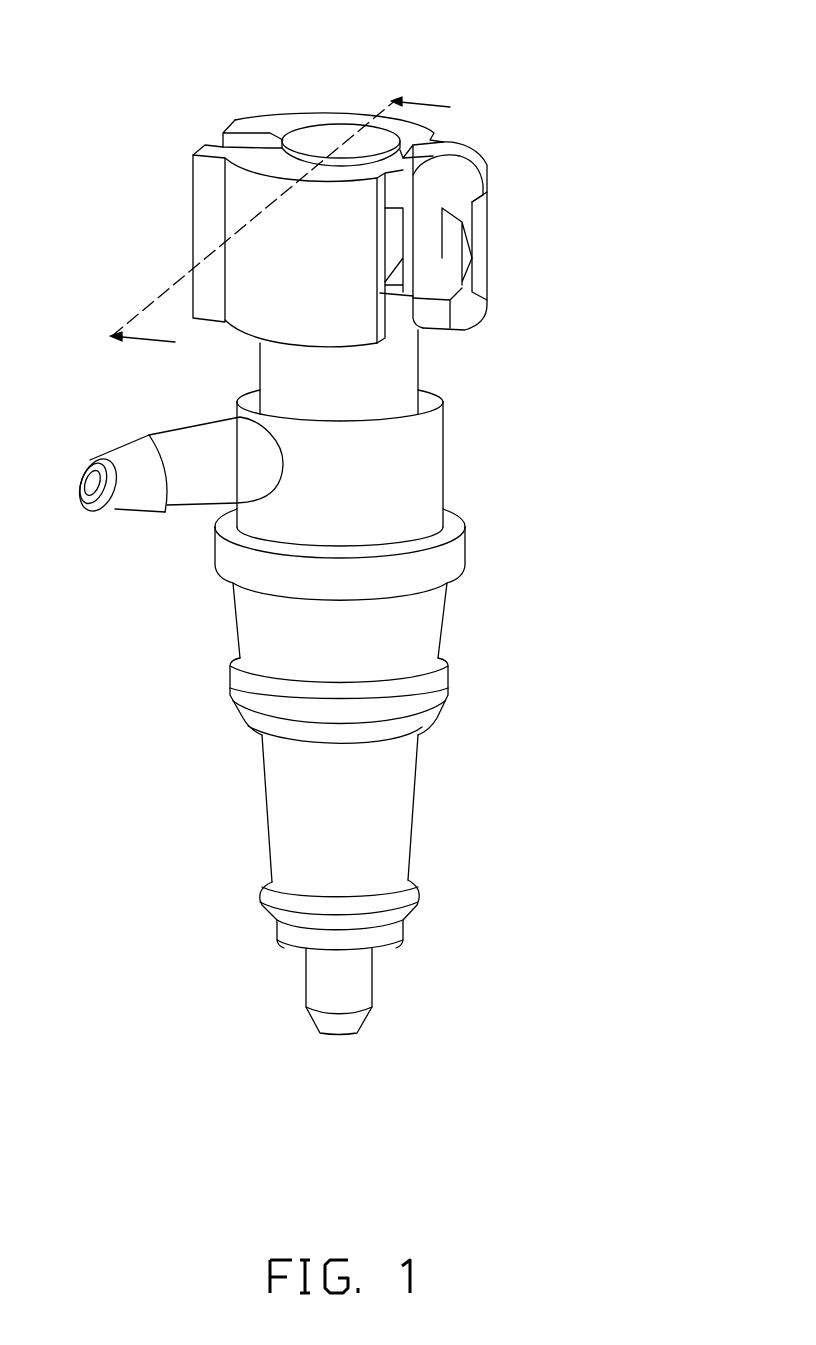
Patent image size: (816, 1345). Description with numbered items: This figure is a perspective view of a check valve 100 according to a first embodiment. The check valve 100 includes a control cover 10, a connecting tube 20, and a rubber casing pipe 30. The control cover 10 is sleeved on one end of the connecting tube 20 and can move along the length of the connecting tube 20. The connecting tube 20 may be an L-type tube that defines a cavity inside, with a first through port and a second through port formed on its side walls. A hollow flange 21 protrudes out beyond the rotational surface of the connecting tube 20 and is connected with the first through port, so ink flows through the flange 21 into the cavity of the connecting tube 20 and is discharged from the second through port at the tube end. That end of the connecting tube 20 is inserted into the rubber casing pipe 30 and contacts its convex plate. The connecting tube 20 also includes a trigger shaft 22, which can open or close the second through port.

The check valve 100 is at (398, 529).
The control cover 10 is at (286, 230).
The connecting tube 20 is at (380, 465).
The flange 21 is at (171, 439).
The trigger shaft 22 is at (280, 991).
The rubber casing pipe 30 is at (385, 766).